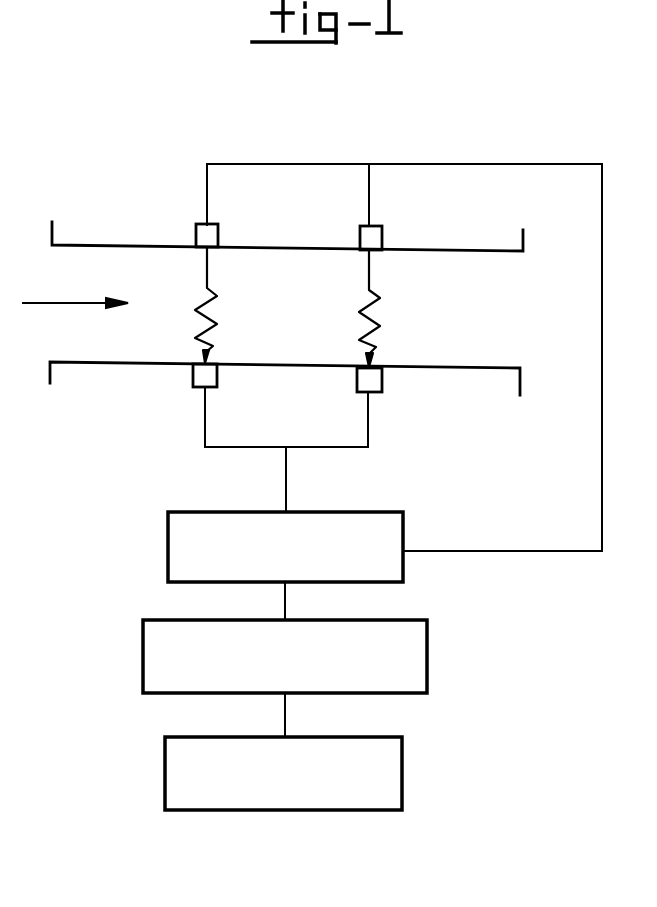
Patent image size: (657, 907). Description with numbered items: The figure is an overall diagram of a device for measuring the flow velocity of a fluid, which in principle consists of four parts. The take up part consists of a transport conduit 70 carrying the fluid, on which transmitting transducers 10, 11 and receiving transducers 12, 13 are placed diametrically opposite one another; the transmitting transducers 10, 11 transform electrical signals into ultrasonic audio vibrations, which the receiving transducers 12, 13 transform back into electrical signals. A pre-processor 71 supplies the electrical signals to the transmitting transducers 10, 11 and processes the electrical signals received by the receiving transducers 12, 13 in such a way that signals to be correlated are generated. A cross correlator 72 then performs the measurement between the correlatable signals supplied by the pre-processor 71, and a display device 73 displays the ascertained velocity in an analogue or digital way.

The transmitting transducer 10 is at (196, 230).
The transmitting transducer 11 is at (382, 236).
The receiving transducer 12 is at (194, 389).
The receiving transducer 13 is at (382, 392).
The transport conduit 70 is at (117, 245).
The pre-processor 71 is at (168, 545).
The cross correlator 72 is at (143, 650).
The display device 73 is at (165, 768).